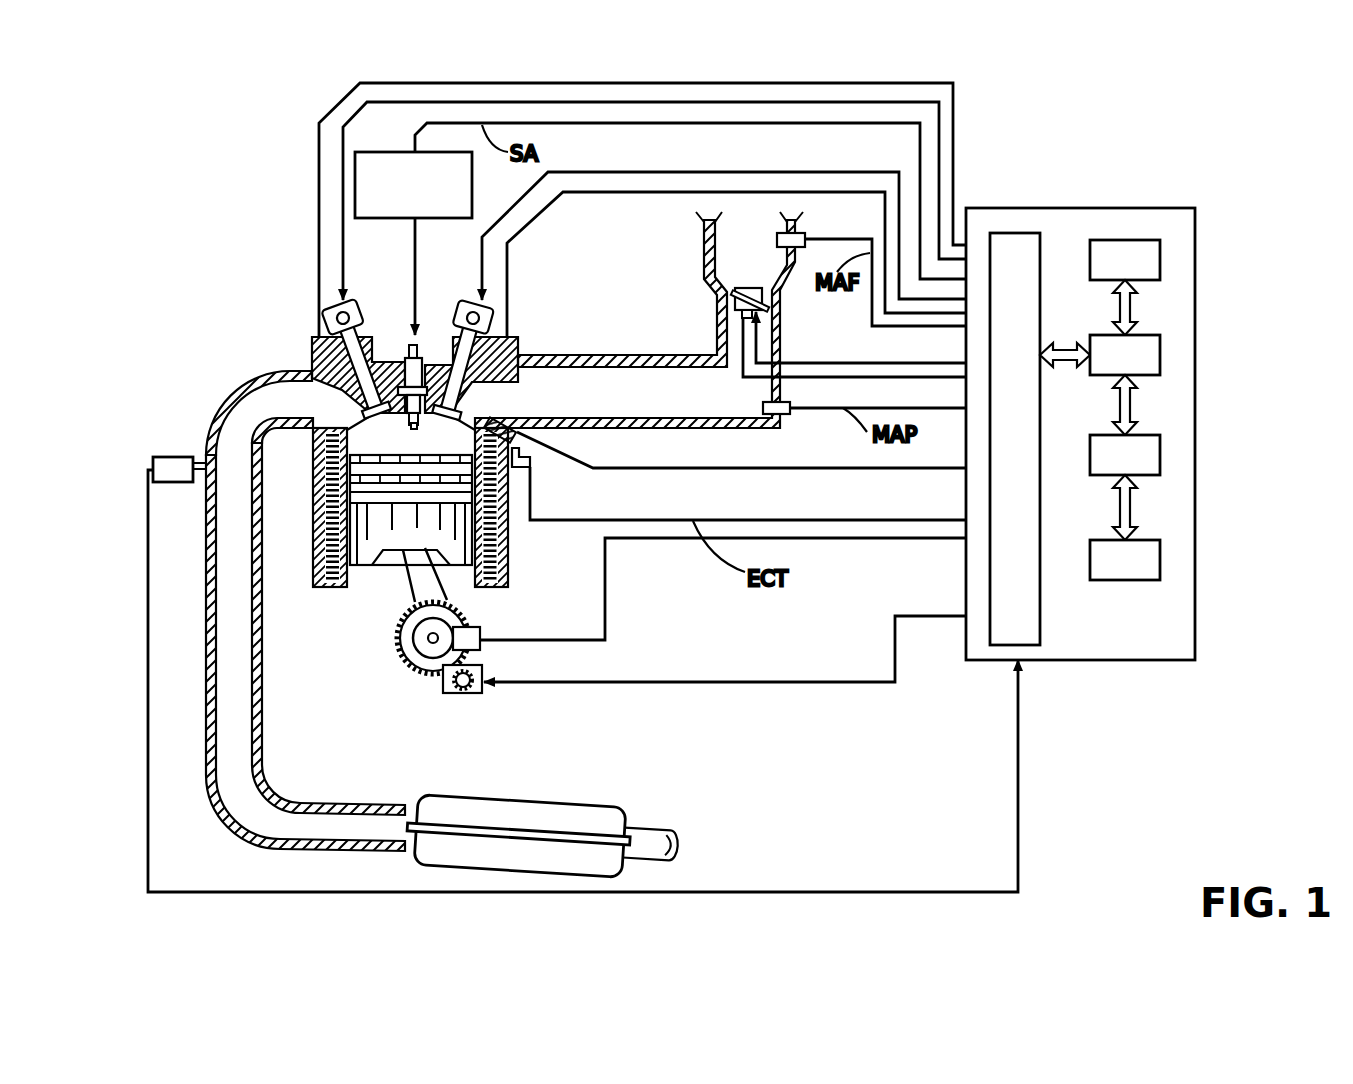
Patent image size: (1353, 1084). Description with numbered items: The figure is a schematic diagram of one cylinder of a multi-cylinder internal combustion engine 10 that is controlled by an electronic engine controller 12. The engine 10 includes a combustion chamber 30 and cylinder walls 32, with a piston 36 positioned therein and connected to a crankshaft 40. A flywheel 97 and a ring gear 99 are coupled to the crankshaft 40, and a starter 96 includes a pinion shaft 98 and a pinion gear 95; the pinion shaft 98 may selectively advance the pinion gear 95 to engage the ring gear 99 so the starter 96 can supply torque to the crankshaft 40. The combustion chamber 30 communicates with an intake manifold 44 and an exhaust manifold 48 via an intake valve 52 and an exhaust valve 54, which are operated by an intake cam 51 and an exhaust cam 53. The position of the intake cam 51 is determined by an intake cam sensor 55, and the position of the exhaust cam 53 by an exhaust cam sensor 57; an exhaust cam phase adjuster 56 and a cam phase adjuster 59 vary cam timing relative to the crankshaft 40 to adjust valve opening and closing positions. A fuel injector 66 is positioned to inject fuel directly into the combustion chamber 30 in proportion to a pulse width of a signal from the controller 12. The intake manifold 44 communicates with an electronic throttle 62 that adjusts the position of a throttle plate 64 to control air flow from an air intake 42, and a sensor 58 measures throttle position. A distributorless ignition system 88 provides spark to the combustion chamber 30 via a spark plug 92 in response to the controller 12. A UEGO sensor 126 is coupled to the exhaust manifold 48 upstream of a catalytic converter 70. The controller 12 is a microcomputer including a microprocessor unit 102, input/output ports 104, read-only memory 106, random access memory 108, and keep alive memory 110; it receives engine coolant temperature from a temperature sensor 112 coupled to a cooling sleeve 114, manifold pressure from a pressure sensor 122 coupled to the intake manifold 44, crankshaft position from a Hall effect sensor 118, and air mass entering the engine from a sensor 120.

The internal combustion engine 10 is at (248, 292).
The electronic engine controller 12 is at (1195, 208).
The combustion chamber 30 is at (325, 537).
The cylinder walls 32 is at (350, 590).
The piston 36 is at (392, 587).
The crankshaft 40 is at (413, 672).
The air intake 42 is at (764, 266).
The intake manifold 44 is at (702, 404).
The exhaust manifold 48 is at (295, 412).
The intake cam 51 is at (462, 300).
The intake valve 52 is at (455, 400).
The exhaust cam 53 is at (358, 300).
The exhaust valve 54 is at (367, 413).
The intake cam sensor 55 is at (490, 328).
The exhaust cam phase adjuster 56 is at (360, 323).
The exhaust cam sensor 57 is at (327, 323).
The throttle position sensor 58 is at (737, 318).
The cam phase adjuster 59 is at (470, 324).
The electronic throttle 62 is at (762, 298).
The throttle plate 64 is at (733, 295).
The fuel injector 66 is at (507, 443).
The catalytic converter 70 is at (425, 797).
The distributorless ignition system 88 is at (365, 152).
The spark plug 92 is at (420, 350).
The pinion gear 95 is at (467, 697).
The starter 96 is at (479, 693).
The flywheel 97 is at (405, 650).
The pinion shaft 98 is at (457, 695).
The ring gear 99 is at (430, 683).
The microprocessor unit 102 is at (1160, 352).
The input/output ports 104 is at (1040, 233).
The read-only memory 106 is at (1160, 255).
The random access memory 108 is at (1160, 452).
The keep alive memory 110 is at (1160, 557).
The temperature sensor 112 is at (520, 467).
The cooling sleeve 114 is at (500, 543).
The Hall effect sensor 118 is at (482, 627).
The air mass sensor 120 is at (800, 233).
The pressure sensor 122 is at (790, 413).
The Universal Exhaust Gas Oxygen (UEGO) sensor 126 is at (153, 457).